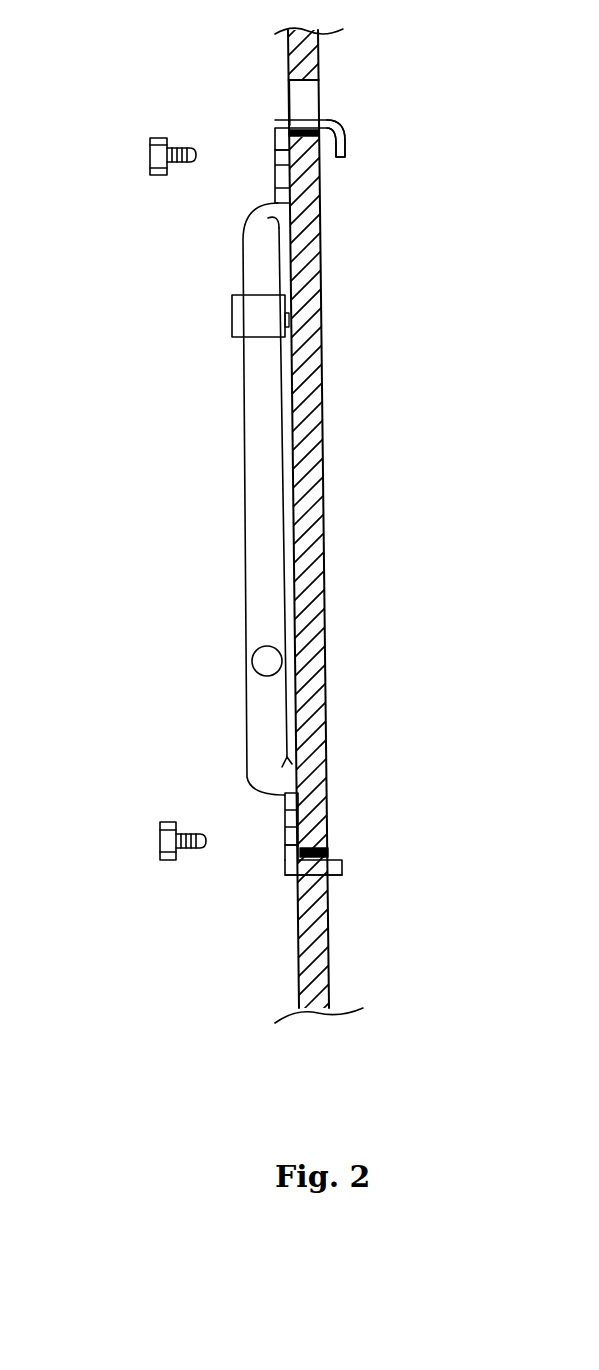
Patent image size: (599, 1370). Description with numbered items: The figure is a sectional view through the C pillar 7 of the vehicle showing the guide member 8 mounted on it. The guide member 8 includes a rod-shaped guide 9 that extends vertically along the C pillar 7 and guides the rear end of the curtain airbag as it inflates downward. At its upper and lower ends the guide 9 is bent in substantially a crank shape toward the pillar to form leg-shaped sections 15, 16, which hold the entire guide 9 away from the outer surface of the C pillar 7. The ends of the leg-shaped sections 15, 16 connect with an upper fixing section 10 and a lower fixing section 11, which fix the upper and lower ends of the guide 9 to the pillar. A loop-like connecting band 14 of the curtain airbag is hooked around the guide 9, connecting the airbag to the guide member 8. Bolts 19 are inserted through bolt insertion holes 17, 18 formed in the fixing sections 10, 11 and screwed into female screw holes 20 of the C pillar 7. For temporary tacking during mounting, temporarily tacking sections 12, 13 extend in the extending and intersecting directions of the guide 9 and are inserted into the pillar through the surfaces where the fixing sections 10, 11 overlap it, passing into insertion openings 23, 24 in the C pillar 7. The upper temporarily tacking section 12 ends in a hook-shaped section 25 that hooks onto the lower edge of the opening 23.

The C pillar 7 is at (312, 488).
The guide member 8 is at (220, 380).
The guide 9 is at (238, 512).
The upper fixing section 10 is at (273, 175).
The lower fixing section 11 is at (283, 820).
The upper temporarily tacking section 12 is at (302, 115).
The lower temporarily tacking section 13 is at (332, 875).
The connecting band 14 is at (232, 318).
The upper leg-shaped section 15 is at (273, 220).
The lower leg-shaped section 16 is at (300, 747).
The bolt insertion hole 17 is at (270, 143).
The bolt insertion hole 18 is at (277, 847).
The bolt 19 is at (270, 153).
The female screw hole 20 is at (325, 160).
The temporarily-tacking-section insertion opening 23 is at (290, 97).
The temporarily-tacking-section insertion opening 24 is at (297, 877).
The hook-shaped section 25 is at (345, 146).